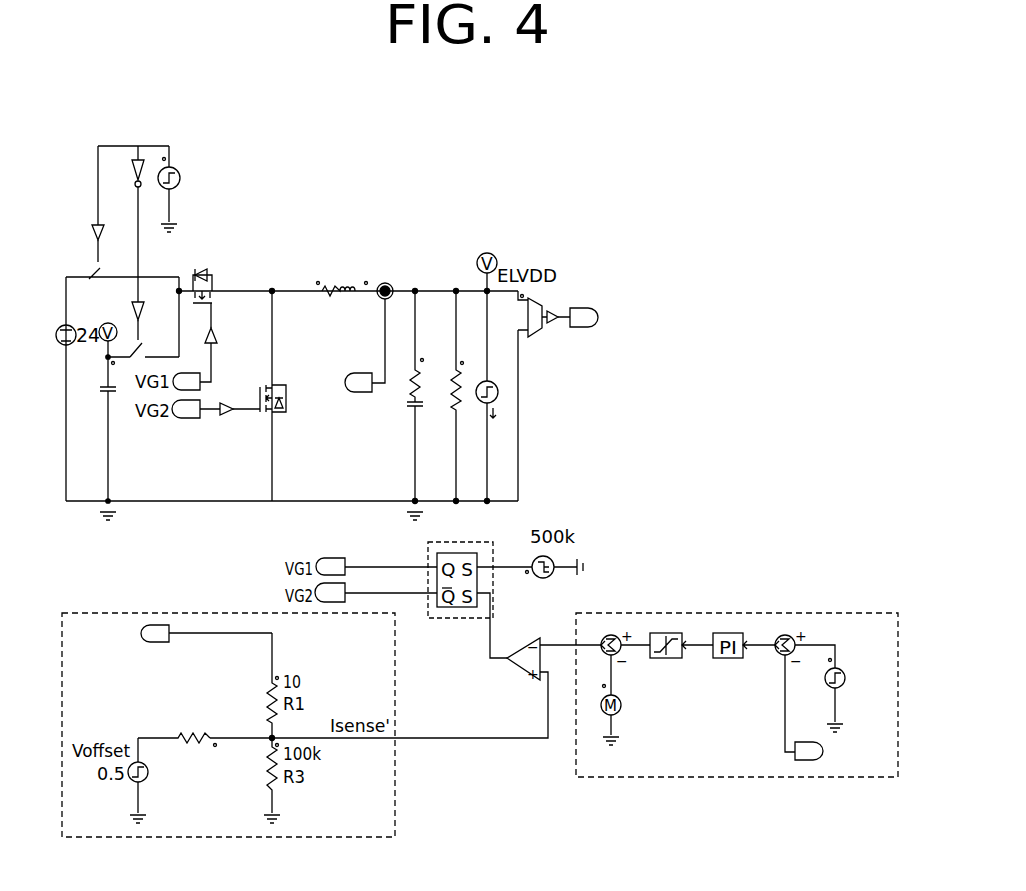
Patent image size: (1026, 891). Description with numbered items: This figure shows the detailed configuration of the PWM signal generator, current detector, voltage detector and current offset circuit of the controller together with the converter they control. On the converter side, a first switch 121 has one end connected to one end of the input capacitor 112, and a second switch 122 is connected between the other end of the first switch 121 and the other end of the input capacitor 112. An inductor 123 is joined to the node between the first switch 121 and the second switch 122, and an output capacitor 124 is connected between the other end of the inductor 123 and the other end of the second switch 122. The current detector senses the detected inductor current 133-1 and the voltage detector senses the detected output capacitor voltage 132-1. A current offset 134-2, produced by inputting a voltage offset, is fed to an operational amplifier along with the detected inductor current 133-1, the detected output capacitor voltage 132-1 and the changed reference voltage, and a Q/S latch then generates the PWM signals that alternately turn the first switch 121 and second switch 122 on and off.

The input capacitor 112 is at (116, 390).
The first switch 121 is at (197, 270).
The second switch 122 is at (289, 388).
The inductor 123 is at (357, 277).
The output capacitor 124 is at (424, 383).
The detected output capacitor voltage 132-1 is at (583, 308).
The detected inductor current 133-1 is at (360, 373).
The current offset 134-2 is at (232, 741).